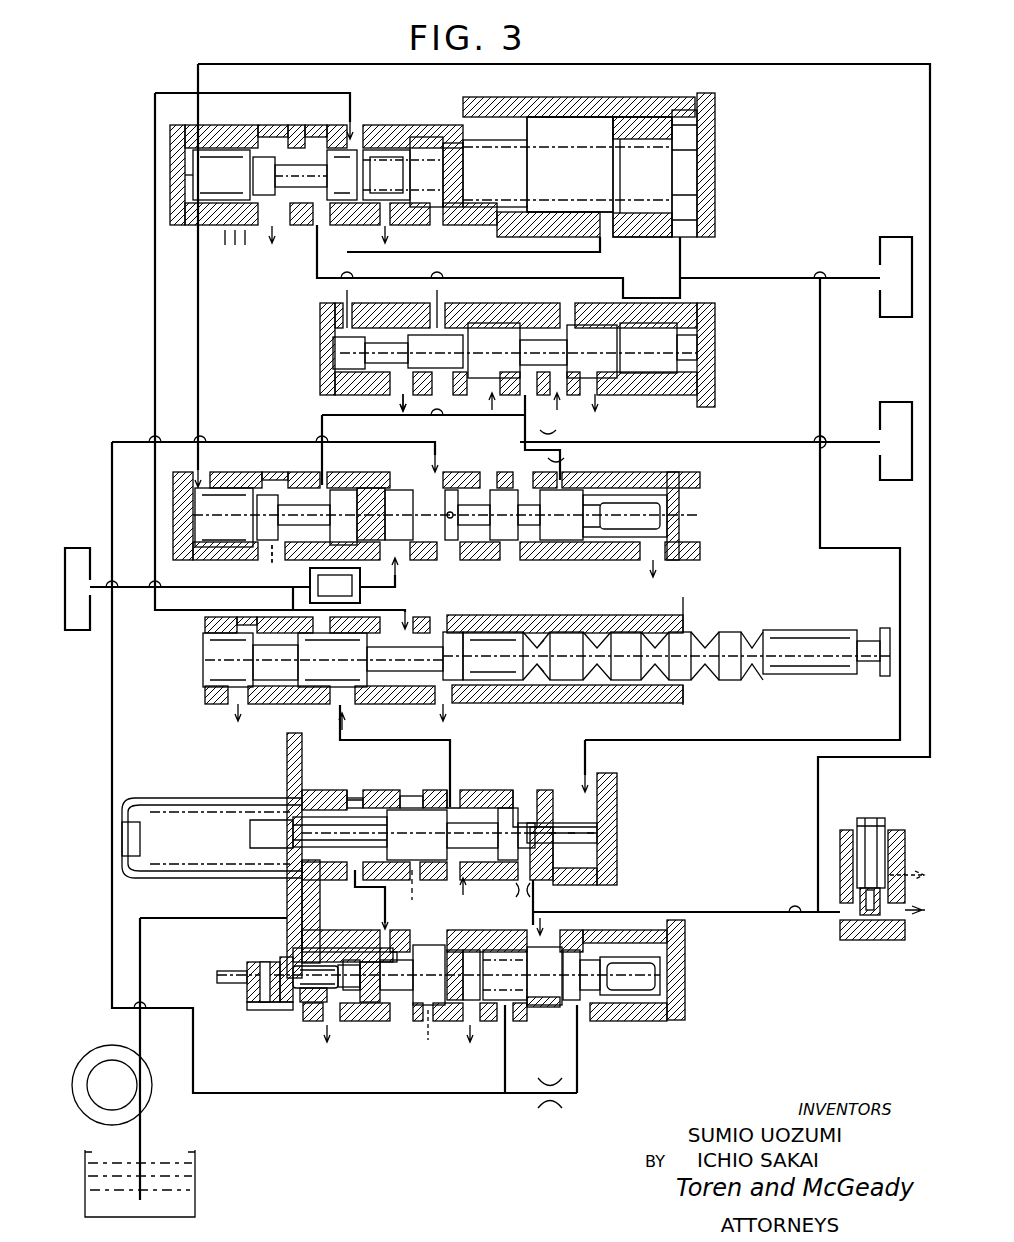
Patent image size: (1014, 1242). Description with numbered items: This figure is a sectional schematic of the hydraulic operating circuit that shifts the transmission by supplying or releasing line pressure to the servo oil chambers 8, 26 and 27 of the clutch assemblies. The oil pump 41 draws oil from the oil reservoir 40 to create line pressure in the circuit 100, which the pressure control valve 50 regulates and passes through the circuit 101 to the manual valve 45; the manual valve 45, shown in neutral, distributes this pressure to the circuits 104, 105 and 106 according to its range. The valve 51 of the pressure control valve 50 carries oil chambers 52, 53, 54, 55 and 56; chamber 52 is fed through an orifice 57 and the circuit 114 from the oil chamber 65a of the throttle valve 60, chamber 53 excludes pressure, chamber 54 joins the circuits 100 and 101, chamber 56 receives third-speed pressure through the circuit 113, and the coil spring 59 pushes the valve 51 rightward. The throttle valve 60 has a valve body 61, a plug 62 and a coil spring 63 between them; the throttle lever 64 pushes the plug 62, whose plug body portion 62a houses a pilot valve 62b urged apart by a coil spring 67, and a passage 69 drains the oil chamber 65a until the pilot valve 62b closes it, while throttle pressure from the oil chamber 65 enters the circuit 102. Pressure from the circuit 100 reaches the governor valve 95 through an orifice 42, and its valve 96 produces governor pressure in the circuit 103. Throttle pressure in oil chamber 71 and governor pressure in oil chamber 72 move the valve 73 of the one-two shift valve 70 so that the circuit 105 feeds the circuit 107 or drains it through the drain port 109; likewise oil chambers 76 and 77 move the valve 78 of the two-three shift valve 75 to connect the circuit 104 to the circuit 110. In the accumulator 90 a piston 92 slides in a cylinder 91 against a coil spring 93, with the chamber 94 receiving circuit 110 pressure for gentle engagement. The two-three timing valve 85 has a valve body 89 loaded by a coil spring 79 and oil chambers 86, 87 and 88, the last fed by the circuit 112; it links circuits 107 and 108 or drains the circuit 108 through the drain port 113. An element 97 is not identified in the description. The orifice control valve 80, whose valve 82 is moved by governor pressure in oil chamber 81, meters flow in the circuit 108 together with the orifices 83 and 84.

The oil chamber 8 is at (80, 548).
The oil chamber 26 is at (876, 418).
The oil chamber 27 is at (876, 256).
The oil reservoir 40 is at (158, 1160).
The oil pump 41 is at (106, 1046).
The orifice 42 is at (792, 906).
The manual valve 45 is at (700, 690).
The pressure control valve 50 is at (437, 855).
The valve 51 is at (414, 834).
The oil chamber 52 is at (354, 795).
The oil chamber 53 is at (422, 797).
The oil chamber 54 is at (458, 798).
The oil chamber 55 is at (522, 797).
The oil chamber 56 is at (560, 795).
The orifice 57 is at (346, 892).
The coil spring 59 is at (188, 798).
The throttle valve 60 is at (500, 991).
The valve body 61 is at (544, 976).
The plug 62 is at (283, 955).
The plug body portion 62a is at (378, 1008).
The pilot valve 62b is at (288, 1010).
The coil spring 63 is at (434, 1010).
The throttle lever 64 is at (220, 984).
The oil chamber 65 is at (514, 1010).
The oil chamber 65a is at (372, 952).
The coil spring 67 is at (315, 1010).
The passage 69 is at (360, 1010).
The 1-2 shift valve 70 is at (185, 512).
The oil chamber 71 is at (436, 548).
The oil chamber 72 is at (204, 558).
The valve 73 is at (292, 505).
The 2-3 shift valve 75 is at (277, 173).
The oil chamber 76 is at (440, 140).
The oil chamber 77 is at (212, 142).
The valve 78 is at (301, 177).
The coil spring 79 is at (333, 378).
The orifice control valve 80 is at (494, 517).
The oil chamber 81 is at (486, 552).
The valve 82 is at (561, 515).
The orifice 83 is at (550, 436).
The orifice 84 is at (566, 464).
The 2-3 timing valve 85 is at (551, 349).
The oil chamber 86 is at (690, 375).
The oil chamber 87 is at (452, 318).
The oil chamber 88 is at (338, 352).
The valve body 89 is at (494, 350).
The accumulator 90 is at (689, 158).
The cylinder 91 is at (570, 117).
The piston 92 is at (645, 117).
The coil spring 93 is at (500, 140).
The chamber 94 is at (742, 135).
The governor valve 95 is at (888, 917).
The valve 96 is at (870, 866).
The exhaust port 97 is at (402, 395).
The circuit 100 is at (196, 922).
The circuit 101 is at (365, 741).
The circuit 102 is at (130, 443).
The circuit 103 is at (200, 290).
The circuit 104 is at (152, 262).
The circuit 105 is at (380, 590).
The circuit 106 is at (290, 596).
The circuit 107 is at (437, 446).
The circuit 108 is at (742, 443).
The drain port 109 is at (268, 560).
The circuit 110 is at (750, 280).
The circuit 112 is at (558, 254).
The drain port 113 is at (440, 392).
The circuit 114 is at (388, 903).